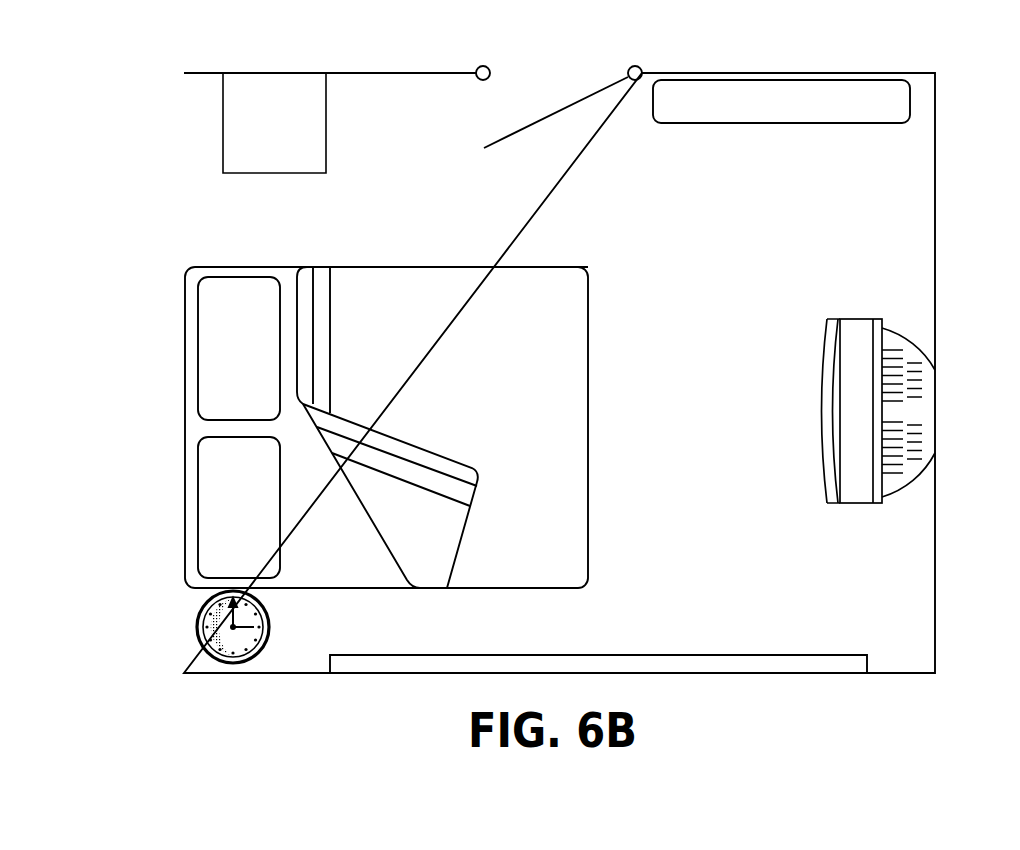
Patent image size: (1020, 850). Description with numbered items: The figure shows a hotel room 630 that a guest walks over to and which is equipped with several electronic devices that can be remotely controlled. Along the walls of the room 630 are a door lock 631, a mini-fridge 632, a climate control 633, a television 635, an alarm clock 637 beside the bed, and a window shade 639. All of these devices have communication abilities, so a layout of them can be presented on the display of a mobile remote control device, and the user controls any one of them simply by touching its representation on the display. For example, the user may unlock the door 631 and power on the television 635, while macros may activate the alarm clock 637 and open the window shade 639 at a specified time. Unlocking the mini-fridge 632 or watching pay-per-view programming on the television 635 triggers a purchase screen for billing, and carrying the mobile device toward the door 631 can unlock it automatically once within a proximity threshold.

The hotel room 630 is at (200, 72).
The door lock 631 is at (477, 68).
The mini-fridge 632 is at (227, 173).
The climate control 633 is at (860, 125).
The television 635 is at (847, 318).
The alarm clock 637 is at (197, 622).
The window shade 639 is at (813, 654).